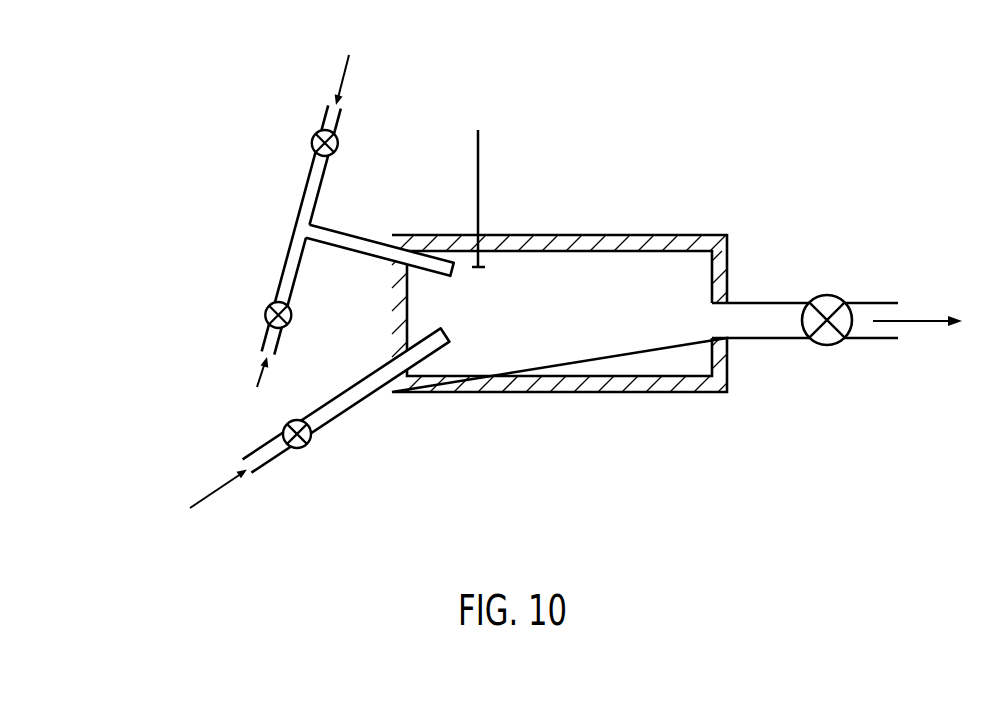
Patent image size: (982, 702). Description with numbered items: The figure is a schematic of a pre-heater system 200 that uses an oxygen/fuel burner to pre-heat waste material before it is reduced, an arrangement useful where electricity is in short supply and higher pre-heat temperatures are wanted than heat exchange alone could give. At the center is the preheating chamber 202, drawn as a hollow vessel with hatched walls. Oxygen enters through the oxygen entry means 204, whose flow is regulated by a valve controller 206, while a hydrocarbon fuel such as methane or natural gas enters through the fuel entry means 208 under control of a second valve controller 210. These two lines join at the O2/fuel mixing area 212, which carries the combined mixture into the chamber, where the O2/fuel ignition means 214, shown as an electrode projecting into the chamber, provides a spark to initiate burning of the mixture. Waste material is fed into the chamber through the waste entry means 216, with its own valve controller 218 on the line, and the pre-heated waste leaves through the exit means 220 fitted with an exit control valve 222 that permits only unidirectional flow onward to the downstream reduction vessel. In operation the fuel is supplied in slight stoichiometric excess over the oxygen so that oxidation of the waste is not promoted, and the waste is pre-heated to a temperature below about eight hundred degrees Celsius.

The pre-heater system 200 is at (672, 93).
The preheating chamber 202 is at (660, 237).
The oxygen entry means 204 is at (323, 120).
The valve controller 206 is at (339, 144).
The fuel entry means 208 is at (257, 338).
The valve controller 210 is at (266, 311).
The O2/fuel mixing area 212 is at (305, 233).
The O2/fuel ignition means 214 is at (480, 203).
The waste entry means 216 is at (263, 472).
The valve controller 218 is at (308, 446).
The exit means 220 is at (763, 300).
The exit control valve 222 is at (837, 295).